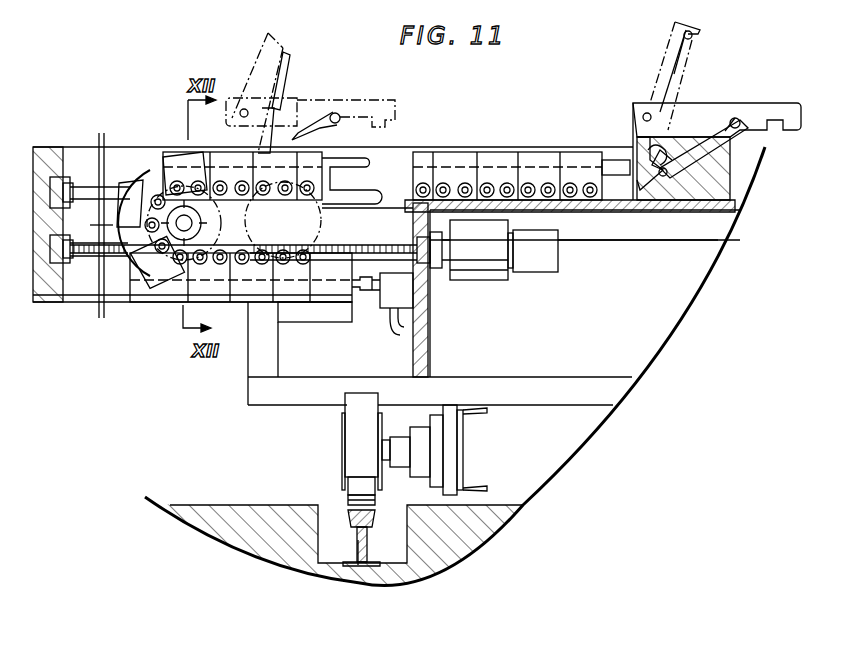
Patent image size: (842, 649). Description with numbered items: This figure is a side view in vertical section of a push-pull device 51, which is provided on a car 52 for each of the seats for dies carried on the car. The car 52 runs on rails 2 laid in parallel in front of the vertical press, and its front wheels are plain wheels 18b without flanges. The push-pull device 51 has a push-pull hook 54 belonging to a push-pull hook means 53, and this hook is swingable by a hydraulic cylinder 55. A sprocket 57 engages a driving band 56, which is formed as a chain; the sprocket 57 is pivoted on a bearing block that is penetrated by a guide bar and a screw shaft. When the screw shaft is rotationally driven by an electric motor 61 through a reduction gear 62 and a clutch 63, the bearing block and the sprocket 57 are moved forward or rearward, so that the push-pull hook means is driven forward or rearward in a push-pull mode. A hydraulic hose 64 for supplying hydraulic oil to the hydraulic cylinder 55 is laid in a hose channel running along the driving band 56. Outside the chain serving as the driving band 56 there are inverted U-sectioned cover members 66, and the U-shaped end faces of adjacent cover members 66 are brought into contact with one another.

The rail 2 is at (360, 568).
The plain wheel 18b is at (357, 433).
The push-pull device 51 is at (131, 137).
The car 52 is at (546, 413).
The push-pull hook means 53 is at (632, 85).
The push-pull hook 54 is at (758, 118).
The hydraulic cylinder 55 is at (690, 212).
The driving band 56 is at (489, 168).
The sprocket 57 is at (160, 288).
The electric motor 61 is at (533, 262).
The reduction gear 62 is at (486, 280).
The clutch 63 is at (433, 268).
The hydraulic hose 64 is at (362, 155).
The cover member 66 is at (183, 172).